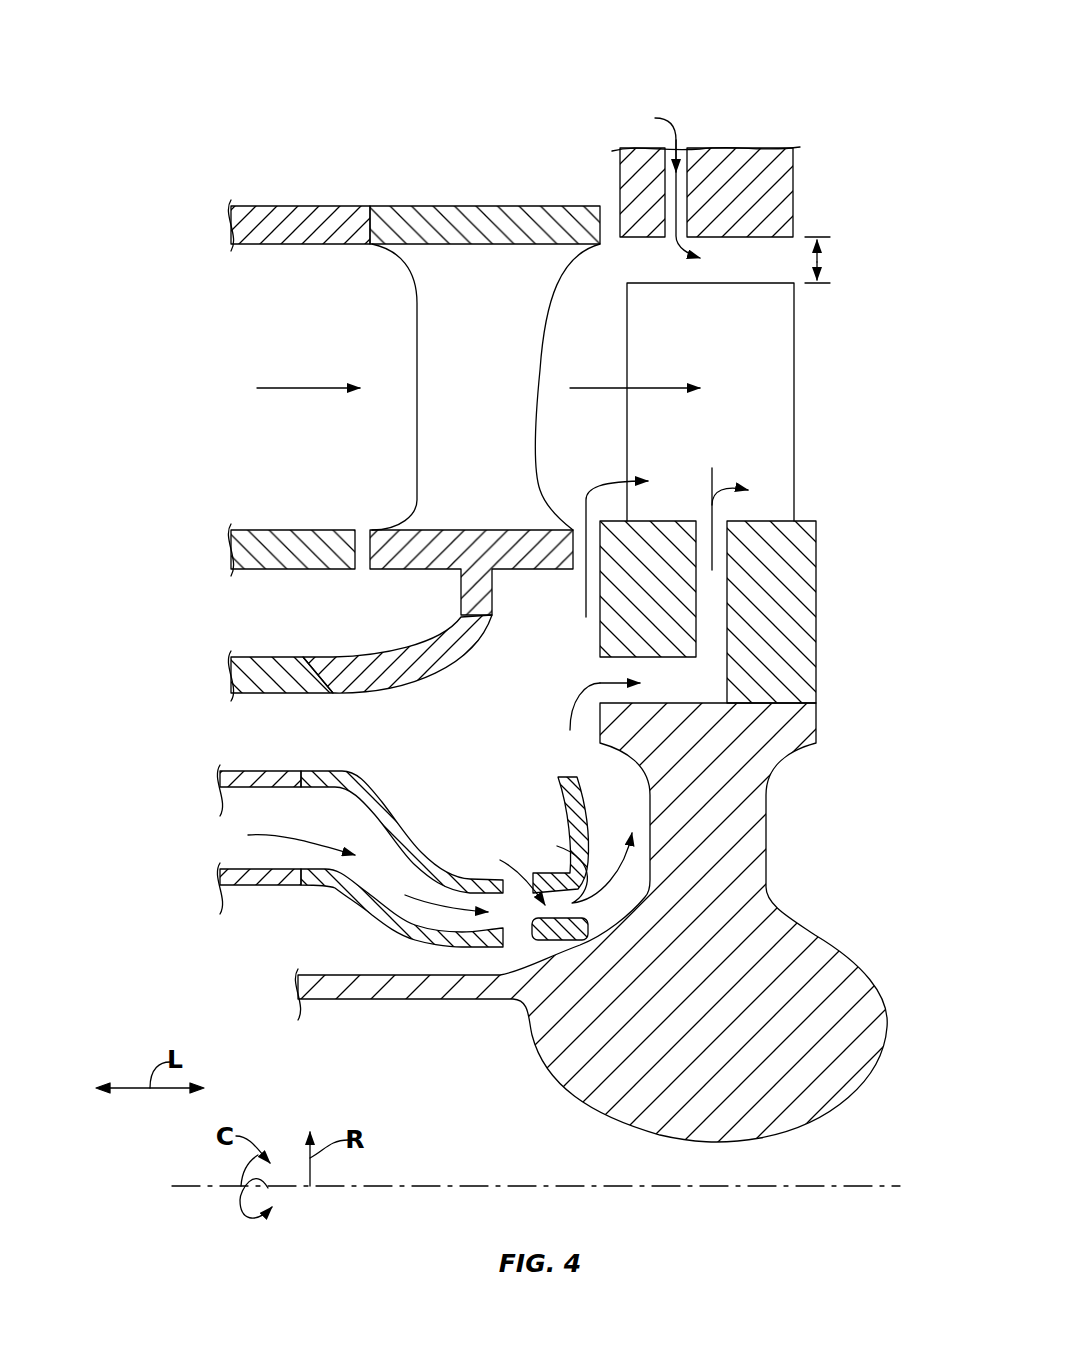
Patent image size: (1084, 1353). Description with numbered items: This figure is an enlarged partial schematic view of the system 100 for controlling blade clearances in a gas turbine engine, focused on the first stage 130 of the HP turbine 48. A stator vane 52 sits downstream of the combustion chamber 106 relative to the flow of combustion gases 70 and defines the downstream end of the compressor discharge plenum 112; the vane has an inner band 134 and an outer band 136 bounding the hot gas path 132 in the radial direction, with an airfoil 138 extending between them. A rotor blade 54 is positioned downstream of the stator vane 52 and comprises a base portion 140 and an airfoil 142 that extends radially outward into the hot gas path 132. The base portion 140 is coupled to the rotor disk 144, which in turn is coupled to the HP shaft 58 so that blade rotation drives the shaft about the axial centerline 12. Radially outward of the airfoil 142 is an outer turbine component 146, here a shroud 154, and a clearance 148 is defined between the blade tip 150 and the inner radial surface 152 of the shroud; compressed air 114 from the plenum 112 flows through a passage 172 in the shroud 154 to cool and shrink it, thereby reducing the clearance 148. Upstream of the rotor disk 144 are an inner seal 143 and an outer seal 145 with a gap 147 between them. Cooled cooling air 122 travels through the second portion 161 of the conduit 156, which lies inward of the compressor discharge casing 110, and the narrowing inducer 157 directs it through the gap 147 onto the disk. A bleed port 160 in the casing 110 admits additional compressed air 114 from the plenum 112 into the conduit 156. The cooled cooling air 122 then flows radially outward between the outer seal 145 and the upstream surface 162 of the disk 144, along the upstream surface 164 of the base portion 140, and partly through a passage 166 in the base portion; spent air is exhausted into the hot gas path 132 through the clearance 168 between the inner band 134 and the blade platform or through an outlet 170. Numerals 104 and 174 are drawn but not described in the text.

The system 100 is at (230, 70).
The stator vane platform 104 is at (340, 206).
The combustion chamber 106 is at (205, 424).
The compressor discharge casing 110 is at (408, 700).
The compressor discharge plenum 112 is at (270, 390).
The compressed air 114 is at (668, 135).
The cooled cooling air 122 is at (272, 814).
The first stage 130 is at (592, 128).
The hot gas path 132 is at (679, 402).
The inner band 134 is at (502, 530).
The outer band 136 is at (542, 206).
The airfoil 138 is at (415, 327).
The base portion 140 is at (818, 615).
The airfoil 142 is at (796, 390).
The inner seal 143 is at (518, 1002).
The rotor disk 144 is at (795, 930).
The outer seal 145 is at (572, 815).
The outer turbine component 146 is at (765, 147).
The gap 147 is at (520, 890).
The clearance 148 is at (820, 262).
The tip 150 is at (657, 283).
The inner radial surface 152 is at (716, 238).
The shroud 154 is at (746, 153).
The conduit 156 is at (252, 892).
The inducer 157 is at (415, 942).
The bleed port 160 is at (323, 652).
The second portion 161 is at (256, 771).
The upstream surface 162 is at (640, 760).
The upstream surface 164 is at (600, 630).
The passage 166 is at (657, 675).
The clearance 168 is at (573, 518).
The outlet 170 is at (696, 519).
The passage 172 is at (686, 147).
The airfoil 174 is at (450, 399).
The HP turbine 48 is at (562, 150).
The stator vane 52 is at (465, 367).
The rotor blade 54 is at (848, 500).
The HP shaft 58 is at (425, 999).
The combustion gases 70 is at (315, 388).
The axial centerline 12 is at (366, 1188).